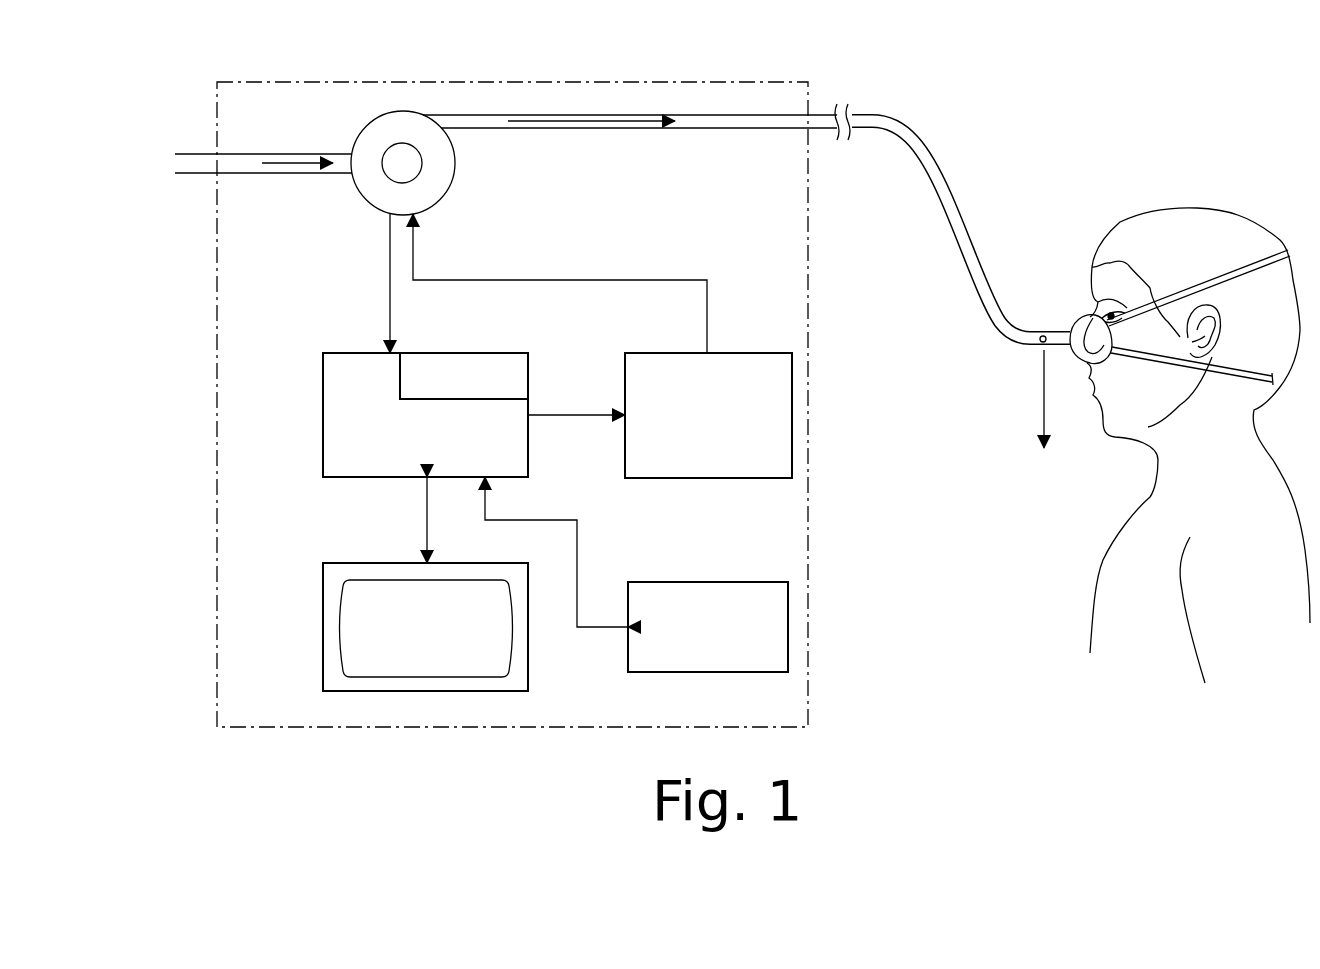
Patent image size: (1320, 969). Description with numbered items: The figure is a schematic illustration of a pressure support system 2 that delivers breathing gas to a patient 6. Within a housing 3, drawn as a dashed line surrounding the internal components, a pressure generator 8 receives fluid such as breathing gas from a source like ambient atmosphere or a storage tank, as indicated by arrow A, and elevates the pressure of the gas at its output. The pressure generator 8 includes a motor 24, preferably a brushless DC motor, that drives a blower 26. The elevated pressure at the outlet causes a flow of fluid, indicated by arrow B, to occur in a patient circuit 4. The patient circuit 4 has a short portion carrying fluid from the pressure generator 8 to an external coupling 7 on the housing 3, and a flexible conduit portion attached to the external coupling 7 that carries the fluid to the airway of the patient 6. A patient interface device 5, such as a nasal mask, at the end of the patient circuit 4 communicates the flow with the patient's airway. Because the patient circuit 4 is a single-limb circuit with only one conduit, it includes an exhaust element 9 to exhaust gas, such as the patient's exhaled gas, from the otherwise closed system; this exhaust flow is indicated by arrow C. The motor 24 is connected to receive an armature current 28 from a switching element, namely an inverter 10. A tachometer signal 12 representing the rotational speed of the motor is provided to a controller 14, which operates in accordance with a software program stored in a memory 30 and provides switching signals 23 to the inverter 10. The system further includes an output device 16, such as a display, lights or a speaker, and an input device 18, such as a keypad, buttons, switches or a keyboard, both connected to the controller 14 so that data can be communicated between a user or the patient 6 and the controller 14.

The pressure support system 2 is at (1151, 405).
The housing 3 is at (808, 498).
The patient circuit 4 is at (905, 133).
The patient interface device 5 is at (1072, 320).
The patient 6 is at (1216, 222).
The external coupling 7 is at (815, 106).
The pressure generator 8 is at (424, 126).
The exhaust element 9 is at (1042, 335).
The inverter 10 is at (768, 353).
The tachometer signal 12 is at (390, 312).
The controller 14 is at (323, 410).
The output device 16 is at (323, 625).
The input device 18 is at (710, 672).
The switching signals 23 is at (568, 415).
The motor 24 is at (388, 178).
The blower 26 is at (453, 170).
The armature current 28 is at (660, 280).
The memory 30 is at (398, 383).
The arrow indicating fluid received from gas source A is at (287, 160).
The arrow indicating flow of fluid in patient circuit B is at (640, 120).
The arrow indicating flow of exhaust gas C is at (1040, 387).